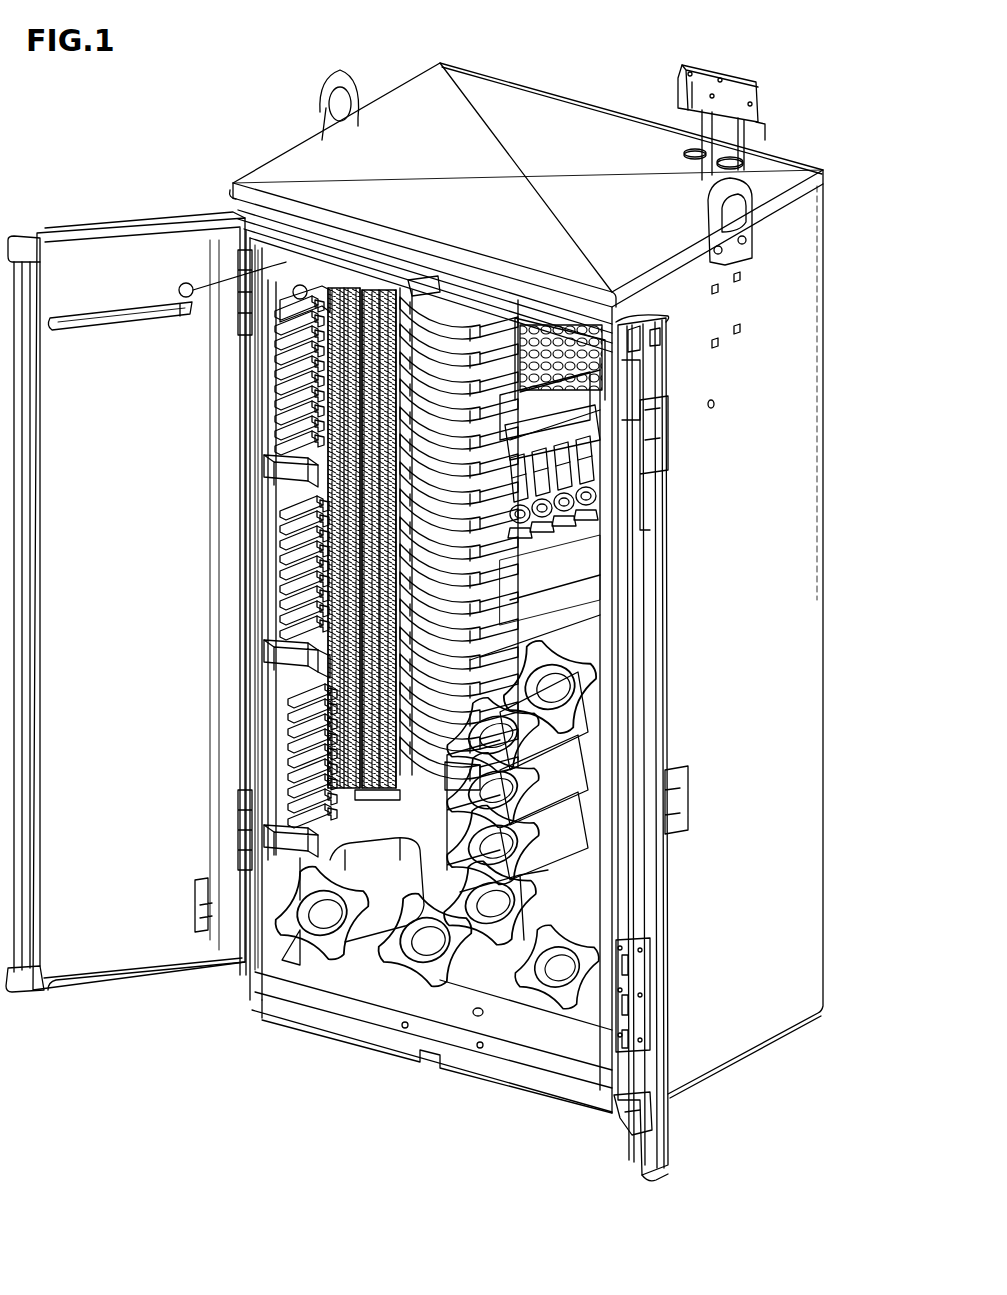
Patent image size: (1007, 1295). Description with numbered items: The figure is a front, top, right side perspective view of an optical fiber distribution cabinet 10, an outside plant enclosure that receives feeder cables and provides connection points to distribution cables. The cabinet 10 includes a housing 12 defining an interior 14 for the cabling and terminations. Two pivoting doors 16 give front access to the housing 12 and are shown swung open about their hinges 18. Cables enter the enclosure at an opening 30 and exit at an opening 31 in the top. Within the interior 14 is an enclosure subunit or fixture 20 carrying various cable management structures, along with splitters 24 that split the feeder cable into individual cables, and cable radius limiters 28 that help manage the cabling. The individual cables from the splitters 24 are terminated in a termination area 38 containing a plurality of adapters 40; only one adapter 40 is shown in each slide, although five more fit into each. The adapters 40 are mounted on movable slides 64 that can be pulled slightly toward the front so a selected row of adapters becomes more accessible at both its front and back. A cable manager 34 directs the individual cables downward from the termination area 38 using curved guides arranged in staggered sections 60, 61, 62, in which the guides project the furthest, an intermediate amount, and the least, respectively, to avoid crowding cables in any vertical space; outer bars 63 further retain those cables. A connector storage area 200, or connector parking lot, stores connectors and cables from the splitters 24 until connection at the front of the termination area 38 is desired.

The optical fiber distribution cabinet 10 is at (222, 158).
The housing 12 is at (500, 95).
The interior 14 is at (345, 972).
The pivoting doors 16 is at (85, 992).
The hinges 18 is at (245, 232).
The fixture 20 is at (266, 538).
The splitters 24 is at (595, 500).
The cable radius limiters 28 is at (582, 648).
The opening 30 is at (714, 167).
The opening 31 is at (682, 152).
The cable manager 34 is at (280, 666).
The termination area 38 is at (385, 290).
The adapters 40 is at (340, 288).
The section 60 is at (235, 395).
The section 61 is at (205, 612).
The section 62 is at (238, 784).
The outer bars 63 is at (276, 470).
The movable slides 64 is at (400, 290).
The connector storage area 200 is at (580, 382).